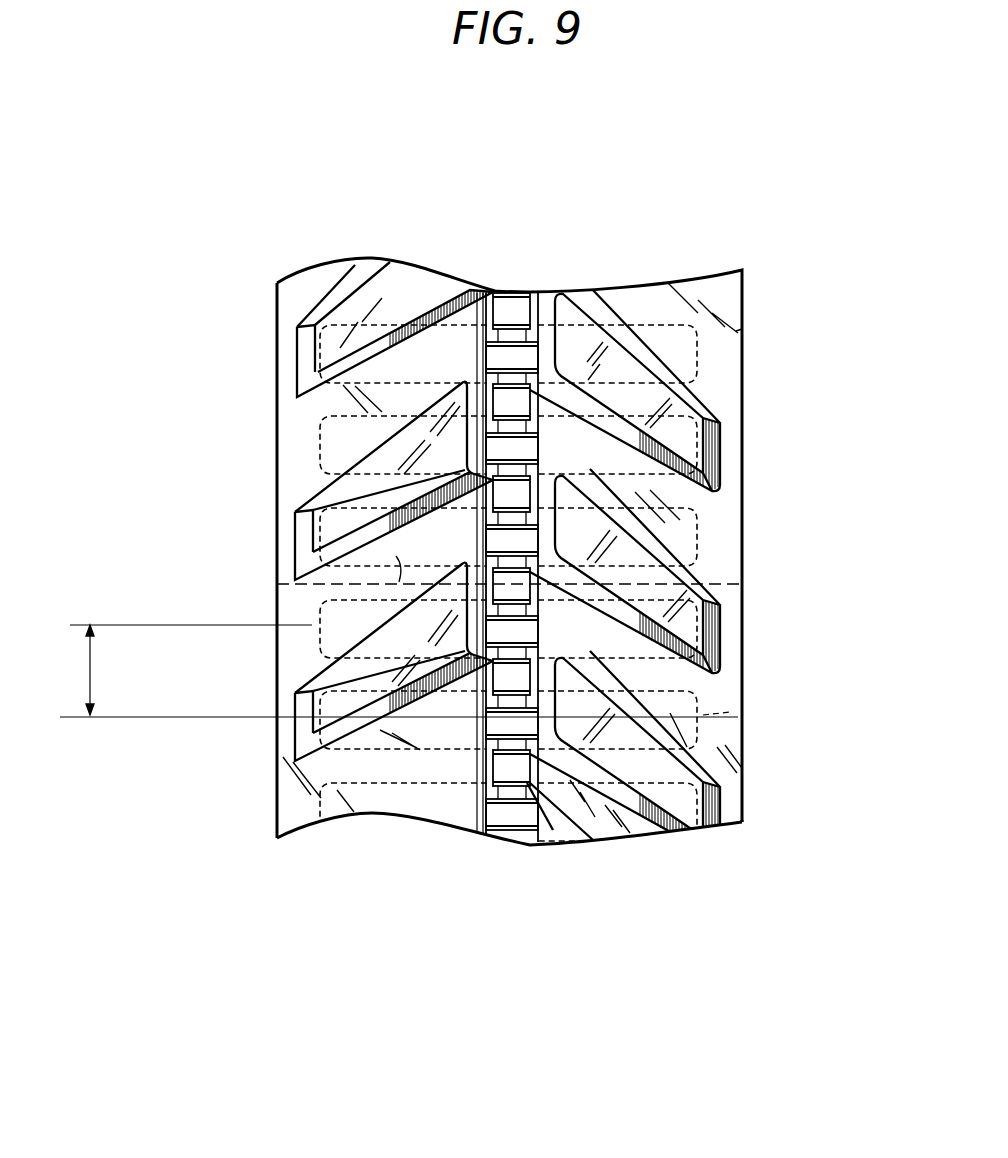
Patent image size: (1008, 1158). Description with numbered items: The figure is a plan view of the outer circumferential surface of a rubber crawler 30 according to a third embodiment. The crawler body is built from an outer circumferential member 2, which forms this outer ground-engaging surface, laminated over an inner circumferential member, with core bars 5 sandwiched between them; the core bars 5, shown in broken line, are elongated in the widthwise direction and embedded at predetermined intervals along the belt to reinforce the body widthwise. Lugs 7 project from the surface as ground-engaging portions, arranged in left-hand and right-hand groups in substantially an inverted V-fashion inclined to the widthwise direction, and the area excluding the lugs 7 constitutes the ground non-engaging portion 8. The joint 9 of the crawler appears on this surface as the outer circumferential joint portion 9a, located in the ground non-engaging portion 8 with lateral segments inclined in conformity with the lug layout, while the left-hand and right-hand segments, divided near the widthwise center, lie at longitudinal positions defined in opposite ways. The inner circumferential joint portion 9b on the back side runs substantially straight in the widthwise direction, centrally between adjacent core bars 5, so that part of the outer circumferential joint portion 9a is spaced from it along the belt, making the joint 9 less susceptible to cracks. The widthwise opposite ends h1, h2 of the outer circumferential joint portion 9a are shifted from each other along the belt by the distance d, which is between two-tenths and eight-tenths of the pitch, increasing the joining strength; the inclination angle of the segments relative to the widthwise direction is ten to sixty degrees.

The outer circumferential member 2 is at (750, 880).
The core bar 5 is at (736, 331).
The lug 7 is at (315, 356).
The ground non-engaging portion 8 is at (712, 511).
The joint 9 is at (508, 583).
The outer circumferential joint portion 9a is at (283, 650).
The inner circumferential joint portion 9b is at (277, 585).
The rubber crawler 30 is at (690, 257).
The widthwise end of the outer circumferential joint portion h1 is at (745, 732).
The widthwise end of the outer circumferential joint portion h2 is at (185, 625).
The distance d is at (77, 670).